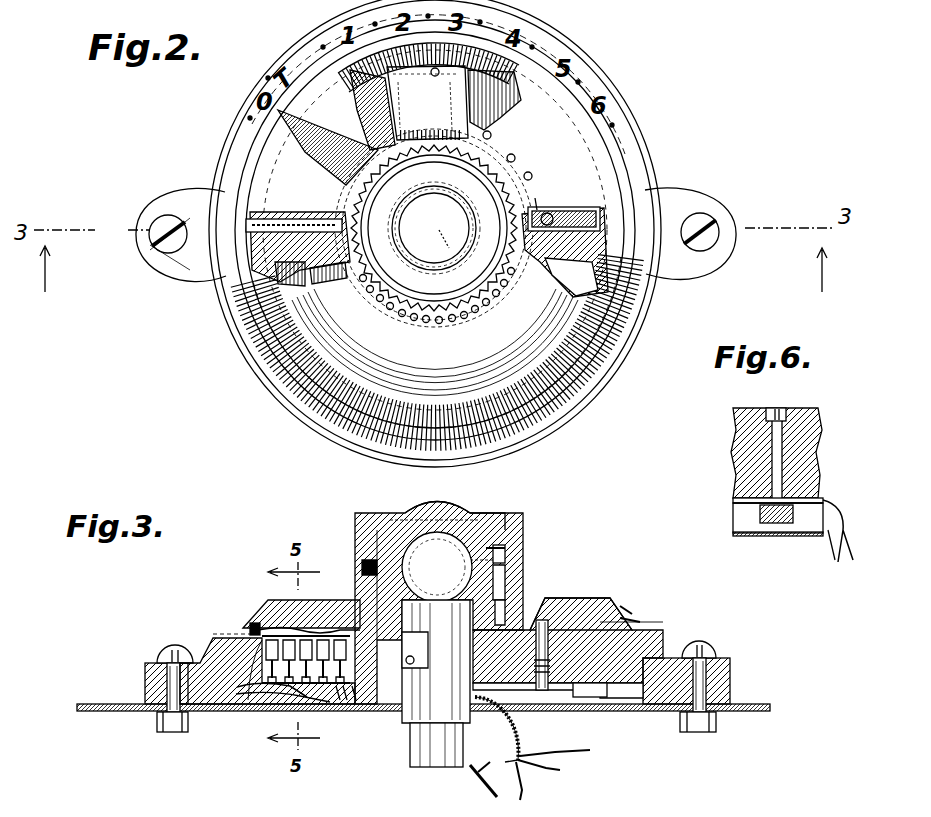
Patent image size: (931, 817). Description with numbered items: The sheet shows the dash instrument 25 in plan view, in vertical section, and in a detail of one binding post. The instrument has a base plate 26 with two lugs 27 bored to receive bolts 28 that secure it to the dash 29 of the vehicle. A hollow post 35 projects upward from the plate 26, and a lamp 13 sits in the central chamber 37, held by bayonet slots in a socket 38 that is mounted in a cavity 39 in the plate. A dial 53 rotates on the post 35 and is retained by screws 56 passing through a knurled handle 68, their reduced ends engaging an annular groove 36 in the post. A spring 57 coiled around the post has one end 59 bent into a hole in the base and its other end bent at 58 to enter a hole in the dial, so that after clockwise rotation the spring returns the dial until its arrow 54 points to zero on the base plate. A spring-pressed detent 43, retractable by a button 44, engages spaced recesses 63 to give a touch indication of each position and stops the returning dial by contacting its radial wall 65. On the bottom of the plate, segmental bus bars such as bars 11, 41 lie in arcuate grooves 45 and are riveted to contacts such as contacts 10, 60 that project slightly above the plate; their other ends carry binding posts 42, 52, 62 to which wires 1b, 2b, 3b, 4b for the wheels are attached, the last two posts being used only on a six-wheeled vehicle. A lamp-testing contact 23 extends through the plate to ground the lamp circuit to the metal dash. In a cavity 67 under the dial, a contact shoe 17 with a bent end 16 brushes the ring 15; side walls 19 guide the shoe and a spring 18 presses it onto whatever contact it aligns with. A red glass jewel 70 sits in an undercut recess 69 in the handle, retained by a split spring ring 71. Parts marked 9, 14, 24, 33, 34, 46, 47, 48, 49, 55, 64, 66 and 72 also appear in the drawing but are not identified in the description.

In FIG. 3, the terminal 9 is at (474, 778).
In FIG. 3, the contact 10 is at (335, 625).
In FIG. 3, the segmental bus bar 11 is at (337, 702).
In FIG. 3, the lamp 13 is at (437, 567).
In FIG. 3, the contact member 14 is at (358, 706).
In FIG. 2, the ring 15 is at (498, 218).
In FIG. 3, the ring 15 is at (436, 661).
In FIG. 3, the bent end 16 is at (345, 704).
In FIG. 2, the contact shoe 17 is at (250, 215).
In FIG. 3, the contact shoe 17 is at (262, 610).
In FIG. 2, the spring 18 is at (280, 274).
In FIG. 3, the spring 18 is at (305, 630).
In FIG. 2, the side walls 19 is at (362, 300).
In FIG. 2, the lamp-testing contact 23 is at (245, 222).
In FIG. 3, the lamp-testing contact 23 is at (245, 634).
In FIG. 3, the spring 24 is at (250, 714).
In FIG. 2, the instrument 25 is at (632, 74).
In FIG. 2, the base plate 26 is at (650, 158).
In FIG. 3, the base plate 26 is at (586, 543).
In FIG. 6, the base plate 26 is at (735, 445).
In FIG. 2, the lugs 27 is at (160, 252).
In FIG. 3, the lugs 27 is at (145, 690).
In FIG. 2, the bolts 28 is at (150, 232).
In FIG. 3, the bolts 28 is at (170, 646).
In FIG. 3, the dash 29 is at (98, 714).
In FIG. 2, the dial scale ring 33 is at (310, 52).
In FIG. 3, the base block 34 is at (520, 686).
In FIG. 3, the hollow post 35 is at (506, 605).
In FIG. 3, the annular groove 36 is at (380, 530).
In FIG. 3, the central chamber 37 is at (505, 550).
In FIG. 3, the socket 38 is at (436, 745).
In FIG. 3, the cavity 39 is at (558, 692).
In FIG. 6, the segmental bus bar 41 is at (784, 460).
In FIG. 2, the binding post 42 is at (409, 105).
In FIG. 6, the binding post 42 is at (779, 408).
In FIG. 2, the spring-pressed detent 43 is at (548, 212).
In FIG. 3, the spring-pressed detent 43 is at (628, 614).
In FIG. 3, the button 44 is at (610, 690).
In FIG. 3, the arcuate grooves 45 is at (278, 694).
In FIG. 6, the arcuate grooves 45 is at (790, 500).
In FIG. 6, the contact plate 46 is at (735, 495).
In FIG. 6, the insulating block 47 is at (748, 508).
In FIG. 6, the insulating pad 48 is at (765, 520).
In FIG. 6, the base strip 49 is at (790, 536).
In FIG. 2, the binding post 52 is at (427, 103).
In FIG. 2, the dial 53 is at (612, 292).
In FIG. 3, the dial 53 is at (610, 622).
In FIG. 2, the arrow 54 is at (280, 112).
In FIG. 2, the contact strip 55 is at (564, 219).
In FIG. 3, the contact strip 55 is at (510, 536).
In FIG. 3, the screws 56 is at (362, 565).
In FIG. 3, the spring 57 is at (548, 640).
In FIG. 3, the bent end 58 is at (505, 568).
In FIG. 3, the bent end 59 is at (415, 650).
In FIG. 3, the contact 60 is at (240, 700).
In FIG. 2, the binding post 62 is at (435, 110).
In FIG. 2, the recesses 63 is at (540, 183).
In FIG. 3, the recesses 63 is at (585, 600).
In FIG. 2, the slot 64 is at (457, 106).
In FIG. 3, the slot 64 is at (636, 624).
In FIG. 2, the radial wall 65 is at (559, 221).
In FIG. 2, the arcuate plate 66 is at (428, 84).
In FIG. 2, the cavity 67 is at (325, 276).
In FIG. 3, the cavity 67 is at (258, 622).
In FIG. 2, the knurled handle 68 is at (420, 322).
In FIG. 3, the knurled handle 68 is at (355, 525).
In FIG. 2, the undercut recess 69 is at (462, 212).
In FIG. 3, the undercut recess 69 is at (486, 512).
In FIG. 2, the red glass jewel 70 is at (434, 228).
In FIG. 3, the red glass jewel 70 is at (445, 508).
In FIG. 2, the split spring ring 71 is at (418, 257).
In FIG. 3, the split spring ring 71 is at (402, 518).
In FIG. 3, the cap ring 72 is at (460, 540).
In FIG. 3, the wire 1b is at (501, 754).
In FIG. 3, the wire 2b is at (522, 788).
In FIG. 3, the wire 3b is at (554, 771).
In FIG. 3, the wire 4b is at (569, 746).
In FIG. 6, the wire 4b is at (821, 556).